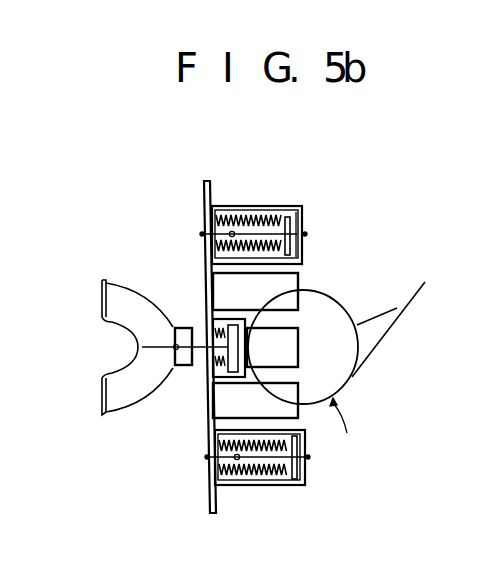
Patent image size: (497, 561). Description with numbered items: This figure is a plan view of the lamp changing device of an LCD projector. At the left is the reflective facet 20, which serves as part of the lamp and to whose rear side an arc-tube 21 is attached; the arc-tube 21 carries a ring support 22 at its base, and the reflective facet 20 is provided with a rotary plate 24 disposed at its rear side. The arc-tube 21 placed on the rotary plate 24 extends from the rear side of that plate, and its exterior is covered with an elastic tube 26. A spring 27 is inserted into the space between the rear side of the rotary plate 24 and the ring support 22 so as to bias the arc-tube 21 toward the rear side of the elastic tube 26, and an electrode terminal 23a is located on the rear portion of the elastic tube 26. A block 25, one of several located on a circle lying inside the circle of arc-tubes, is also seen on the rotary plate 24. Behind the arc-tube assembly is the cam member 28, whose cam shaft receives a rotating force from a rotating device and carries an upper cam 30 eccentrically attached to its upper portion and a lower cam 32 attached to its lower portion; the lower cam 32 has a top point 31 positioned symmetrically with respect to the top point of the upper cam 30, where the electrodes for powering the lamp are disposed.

The reflective facet 20 is at (102, 283).
The arc-tube 21 is at (142, 347).
The ring support 22 is at (217, 307).
The electrode terminal 23a is at (305, 235).
The rotary plate 24 is at (204, 200).
The block 25 is at (293, 283).
The elastic tube 26 is at (260, 212).
The spring 27 is at (218, 220).
The cam member 28 is at (349, 434).
The upper cam 30 is at (333, 323).
The top point 31 is at (405, 321).
The lower cam 32 is at (372, 348).